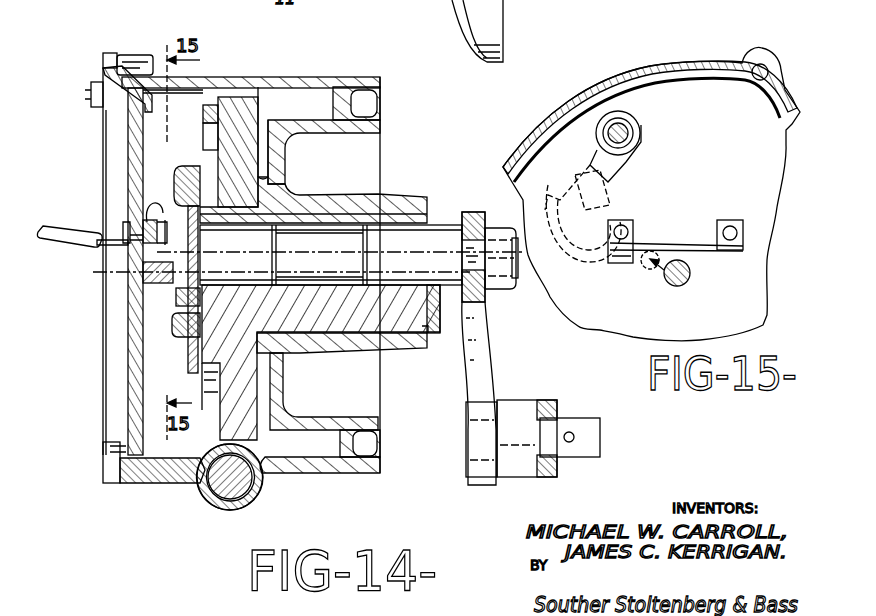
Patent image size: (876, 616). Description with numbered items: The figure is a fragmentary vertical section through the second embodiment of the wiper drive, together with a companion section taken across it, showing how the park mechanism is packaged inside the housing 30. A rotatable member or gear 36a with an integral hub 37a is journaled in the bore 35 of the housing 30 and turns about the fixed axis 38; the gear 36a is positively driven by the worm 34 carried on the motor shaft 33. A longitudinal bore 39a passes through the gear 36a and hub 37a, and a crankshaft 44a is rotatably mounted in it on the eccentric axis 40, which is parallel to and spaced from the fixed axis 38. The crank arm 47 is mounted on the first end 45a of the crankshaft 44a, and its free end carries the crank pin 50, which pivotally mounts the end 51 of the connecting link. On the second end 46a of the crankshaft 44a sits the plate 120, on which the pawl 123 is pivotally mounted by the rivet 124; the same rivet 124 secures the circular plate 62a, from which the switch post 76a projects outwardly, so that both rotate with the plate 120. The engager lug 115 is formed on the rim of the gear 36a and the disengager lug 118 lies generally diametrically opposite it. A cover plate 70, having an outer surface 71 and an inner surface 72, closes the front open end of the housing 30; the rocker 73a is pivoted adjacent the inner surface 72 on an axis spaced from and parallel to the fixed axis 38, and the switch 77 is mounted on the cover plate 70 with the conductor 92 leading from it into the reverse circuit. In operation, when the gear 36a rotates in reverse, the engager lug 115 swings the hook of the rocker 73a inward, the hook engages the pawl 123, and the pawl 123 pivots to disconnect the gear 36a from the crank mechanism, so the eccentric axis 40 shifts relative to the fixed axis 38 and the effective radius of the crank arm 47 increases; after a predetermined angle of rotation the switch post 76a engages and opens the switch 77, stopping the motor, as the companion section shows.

In FIG. 14, the housing 30 is at (318, 77).
In FIG. 14, the shaft 33 is at (200, 488).
In FIG. 14, the worm 34 is at (220, 504).
In FIG. 14, the bore 35 is at (393, 333).
In FIG. 14, the rotatable member or gear 36a is at (258, 118).
In FIG. 14, the hub 37a is at (347, 332).
In FIG. 14, the fixed axis of rotation 38 is at (430, 272).
In FIG. 14, the longitudinal bore 39a is at (393, 226).
In FIG. 14, the eccentric axis 40 is at (445, 250).
In FIG. 14, the crankshaft 44a is at (336, 247).
In FIG. 14, the first end 45a is at (437, 218).
In FIG. 14, the second end 46a is at (238, 152).
In FIG. 14, the crank arm 47 is at (483, 348).
In FIG. 14, the crank pin 50 is at (583, 458).
In FIG. 14, the end of the connecting link 51 is at (592, 402).
In FIG. 14, the circular plate 62a is at (196, 156).
In FIG. 14, the cover plate 70 is at (130, 352).
In FIG. 15, the cover plate 70 is at (743, 169).
In FIG. 14, the outer surface 71 is at (130, 141).
In FIG. 14, the inner surface 72 is at (141, 317).
In FIG. 15, the rocker 73a is at (642, 130).
In FIG. 14, the switch post 76a is at (185, 300).
In FIG. 15, the switch post 76a is at (678, 286).
In FIG. 14, the switch 77 is at (150, 210).
In FIG. 15, the switch 77 is at (694, 248).
In FIG. 14, the conductor 92 is at (55, 240).
In FIG. 14, the engager lug 115 is at (206, 121).
In FIG. 14, the disengager lug 118 is at (203, 397).
In FIG. 14, the plate 120 is at (220, 298).
In FIG. 14, the pawl 123 is at (187, 357).
In FIG. 15, the pawl 123 is at (566, 280).
In FIG. 14, the rivet 124 is at (168, 327).